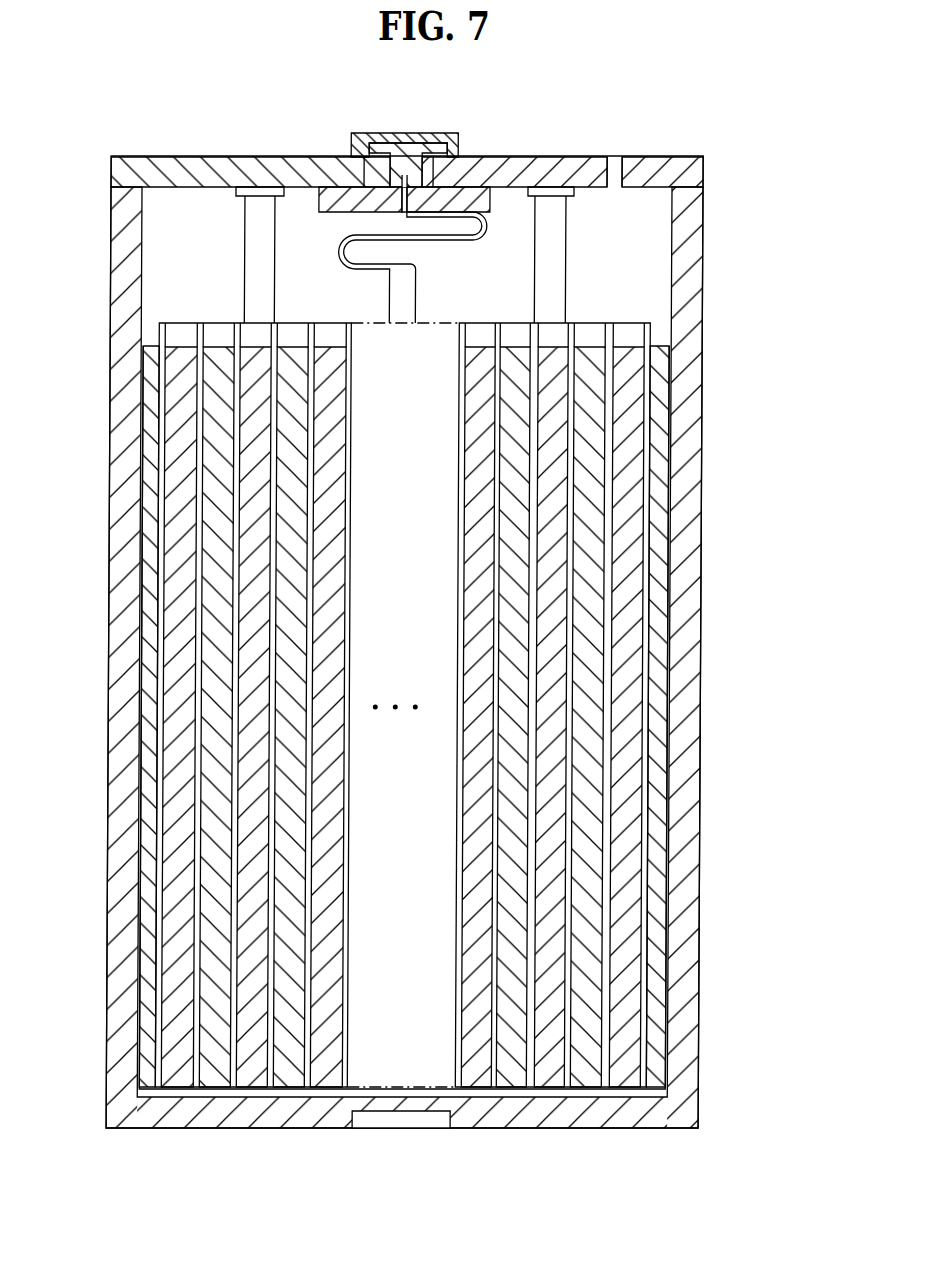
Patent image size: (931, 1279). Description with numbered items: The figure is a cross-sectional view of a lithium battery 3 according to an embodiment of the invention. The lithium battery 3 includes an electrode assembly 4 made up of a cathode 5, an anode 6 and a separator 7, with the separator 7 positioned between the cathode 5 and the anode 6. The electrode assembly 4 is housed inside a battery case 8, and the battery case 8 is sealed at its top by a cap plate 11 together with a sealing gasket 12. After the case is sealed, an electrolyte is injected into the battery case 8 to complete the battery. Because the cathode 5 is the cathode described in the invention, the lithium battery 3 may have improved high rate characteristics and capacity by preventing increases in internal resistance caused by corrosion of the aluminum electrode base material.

The lithium battery 3 is at (748, 267).
The electrode assembly 4 is at (584, 297).
The cathode 5 is at (639, 1014).
The anode 6 is at (213, 922).
The separator 7 is at (165, 1012).
The battery case 8 is at (111, 292).
The cap plate 11 is at (523, 157).
The sealing gasket 12 is at (362, 134).